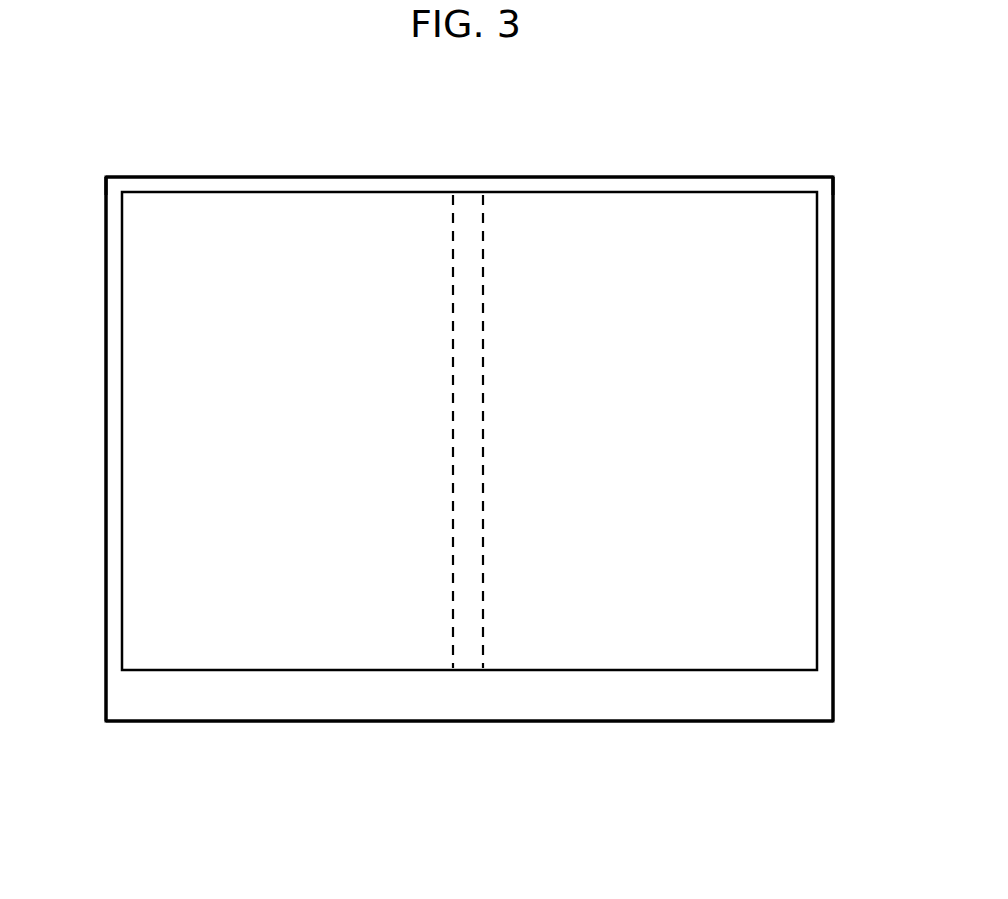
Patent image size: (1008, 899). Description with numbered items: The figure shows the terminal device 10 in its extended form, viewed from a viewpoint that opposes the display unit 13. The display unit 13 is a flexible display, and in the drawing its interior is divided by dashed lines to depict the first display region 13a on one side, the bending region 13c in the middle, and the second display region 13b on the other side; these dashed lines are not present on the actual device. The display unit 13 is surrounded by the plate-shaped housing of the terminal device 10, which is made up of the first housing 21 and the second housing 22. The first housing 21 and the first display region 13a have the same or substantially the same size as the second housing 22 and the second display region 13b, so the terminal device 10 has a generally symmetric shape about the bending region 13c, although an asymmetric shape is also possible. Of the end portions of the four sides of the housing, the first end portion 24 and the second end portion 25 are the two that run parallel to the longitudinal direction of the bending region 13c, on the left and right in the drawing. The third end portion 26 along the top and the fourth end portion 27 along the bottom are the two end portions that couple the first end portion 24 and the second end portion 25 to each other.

The terminal device 10 is at (763, 145).
The display unit 13 is at (546, 190).
The first display region 13a is at (220, 218).
The second display region 13b is at (638, 217).
The bending region 13c is at (467, 210).
The first housing 21 is at (114, 190).
The second housing 22 is at (826, 197).
The first end portion 24 is at (105, 395).
The second end portion 25 is at (834, 368).
The third end portion 26 is at (347, 177).
The fourth end portion 27 is at (441, 722).